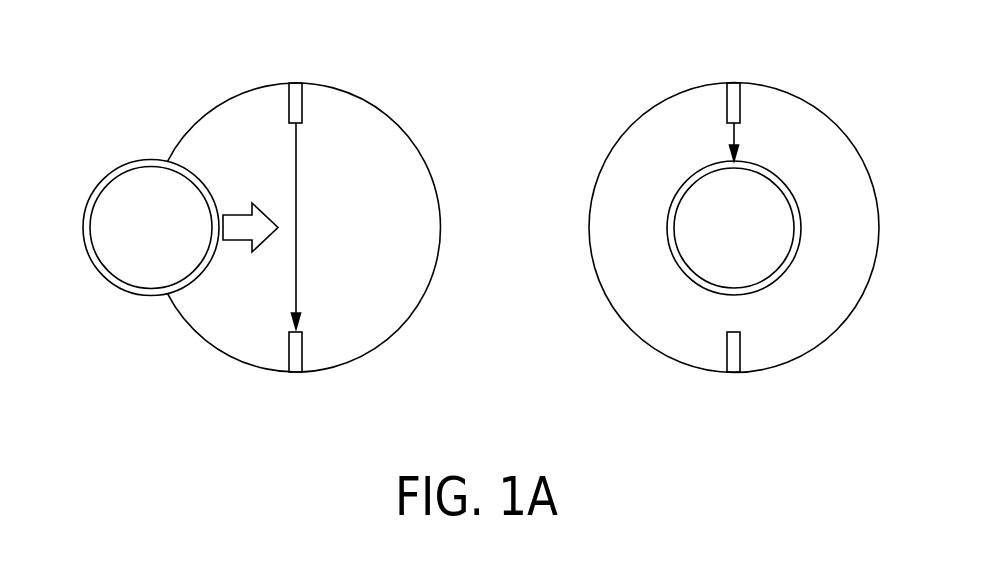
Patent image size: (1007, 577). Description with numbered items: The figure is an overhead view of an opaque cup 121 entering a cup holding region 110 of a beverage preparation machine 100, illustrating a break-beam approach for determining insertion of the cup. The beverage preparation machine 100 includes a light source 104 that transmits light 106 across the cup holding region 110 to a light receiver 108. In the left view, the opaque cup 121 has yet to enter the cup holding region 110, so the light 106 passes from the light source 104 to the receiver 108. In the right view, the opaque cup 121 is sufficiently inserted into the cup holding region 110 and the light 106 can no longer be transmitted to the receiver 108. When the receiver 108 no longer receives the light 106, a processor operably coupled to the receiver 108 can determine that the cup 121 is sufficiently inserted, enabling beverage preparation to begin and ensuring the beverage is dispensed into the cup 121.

The beverage preparation machine 100 is at (385, 112).
The light source 104 is at (298, 108).
The light 106 is at (297, 157).
The light receiver 108 is at (297, 352).
The cup holding region 110 is at (410, 182).
The opaque cup 121 is at (140, 293).